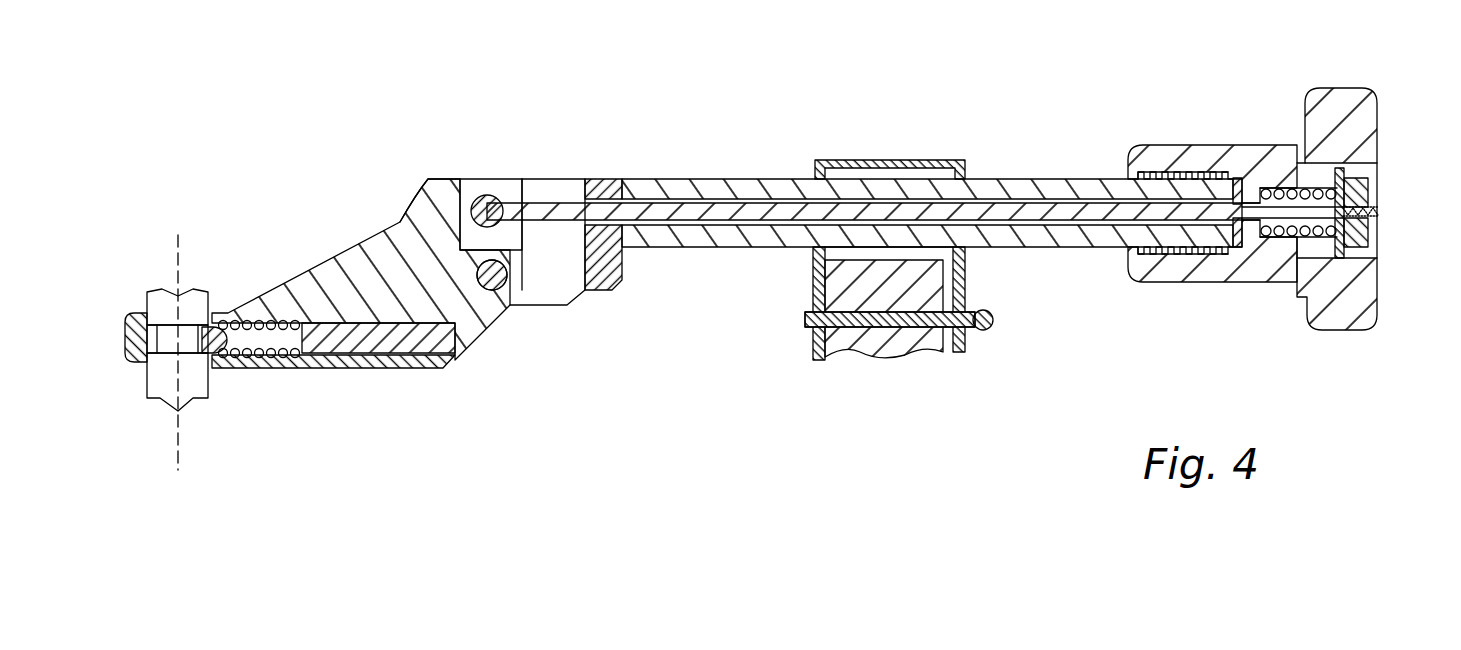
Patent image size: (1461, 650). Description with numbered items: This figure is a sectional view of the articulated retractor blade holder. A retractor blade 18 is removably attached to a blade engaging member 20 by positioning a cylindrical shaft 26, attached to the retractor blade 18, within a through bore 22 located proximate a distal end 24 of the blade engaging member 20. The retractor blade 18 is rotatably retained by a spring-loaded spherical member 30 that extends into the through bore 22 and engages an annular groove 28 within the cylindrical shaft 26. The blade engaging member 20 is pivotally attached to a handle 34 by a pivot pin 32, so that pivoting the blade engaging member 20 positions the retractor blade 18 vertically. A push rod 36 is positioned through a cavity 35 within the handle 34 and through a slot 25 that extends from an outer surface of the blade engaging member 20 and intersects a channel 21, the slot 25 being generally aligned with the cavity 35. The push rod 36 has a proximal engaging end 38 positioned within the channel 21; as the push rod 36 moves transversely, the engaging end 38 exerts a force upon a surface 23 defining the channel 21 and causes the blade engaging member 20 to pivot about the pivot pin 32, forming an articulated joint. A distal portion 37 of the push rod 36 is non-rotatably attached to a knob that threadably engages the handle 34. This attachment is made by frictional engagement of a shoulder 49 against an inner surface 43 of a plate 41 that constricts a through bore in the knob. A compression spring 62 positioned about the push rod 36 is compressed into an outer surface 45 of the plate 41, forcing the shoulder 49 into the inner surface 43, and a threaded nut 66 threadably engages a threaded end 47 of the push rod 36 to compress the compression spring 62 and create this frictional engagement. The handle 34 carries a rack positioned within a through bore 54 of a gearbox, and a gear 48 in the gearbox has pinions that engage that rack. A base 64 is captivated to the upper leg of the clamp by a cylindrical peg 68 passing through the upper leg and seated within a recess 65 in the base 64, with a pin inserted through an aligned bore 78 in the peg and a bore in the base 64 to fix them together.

The retractor blade 18 is at (163, 410).
The blade engaging member 20 is at (398, 247).
The channel 21 is at (468, 187).
The through bore 22 is at (158, 340).
The surface 23 is at (442, 180).
The distal end 24 is at (128, 318).
The slot 25 is at (178, 470).
The cylindrical shaft 26 is at (195, 292).
The annular groove 28 is at (128, 362).
The spring-loaded spherical member 30 is at (218, 358).
The pivot pin 32 is at (512, 293).
The handle 34 is at (645, 183).
The cavity 35 is at (712, 198).
The push rod 36 is at (563, 195).
The distal portion 37 is at (1240, 165).
The proximal engaging end 38 is at (487, 196).
The plate 41 is at (1200, 176).
The inner surface 43 is at (1212, 210).
The outer surface 45 is at (1285, 223).
The threaded end 47 is at (1375, 212).
The gear 48 is at (1318, 190).
The shoulder 49 is at (1248, 227).
The through bore 54 is at (815, 172).
The compression spring 62 is at (1365, 100).
The base 64 is at (804, 293).
The recess 65 is at (842, 248).
The threaded nut 66 is at (1358, 190).
The cylindrical peg 68 is at (905, 340).
The bore 78 is at (985, 328).